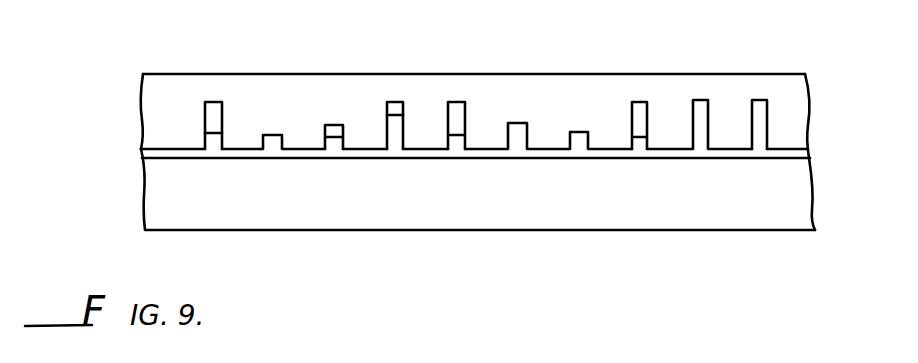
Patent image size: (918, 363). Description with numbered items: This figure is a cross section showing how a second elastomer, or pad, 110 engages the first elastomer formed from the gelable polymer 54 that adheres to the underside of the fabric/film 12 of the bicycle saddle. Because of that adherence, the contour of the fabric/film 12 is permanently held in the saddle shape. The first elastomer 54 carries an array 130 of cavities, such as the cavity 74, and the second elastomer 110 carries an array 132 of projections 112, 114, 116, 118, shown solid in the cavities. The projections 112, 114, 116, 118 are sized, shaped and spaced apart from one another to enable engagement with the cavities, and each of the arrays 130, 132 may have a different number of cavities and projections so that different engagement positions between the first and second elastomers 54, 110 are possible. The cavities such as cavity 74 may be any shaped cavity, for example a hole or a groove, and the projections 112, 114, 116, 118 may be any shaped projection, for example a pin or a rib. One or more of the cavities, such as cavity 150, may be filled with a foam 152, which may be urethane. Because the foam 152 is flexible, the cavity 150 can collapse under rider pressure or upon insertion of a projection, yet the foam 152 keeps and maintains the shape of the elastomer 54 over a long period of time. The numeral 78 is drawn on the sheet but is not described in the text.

The fabric/film 12 is at (643, 73).
The gelable polymer 54 is at (552, 84).
The cavity 74 is at (215, 102).
The end contact pad 78 is at (767, 100).
The second elastomer 110 is at (775, 217).
The projection 112 is at (205, 132).
The projection 114 is at (330, 136).
The projection 116 is at (458, 134).
The projection 118 is at (642, 137).
The array of cavities 130 is at (200, 95).
The array of projections 132 is at (198, 175).
The cavity 150 is at (393, 102).
The foam 152 is at (402, 108).